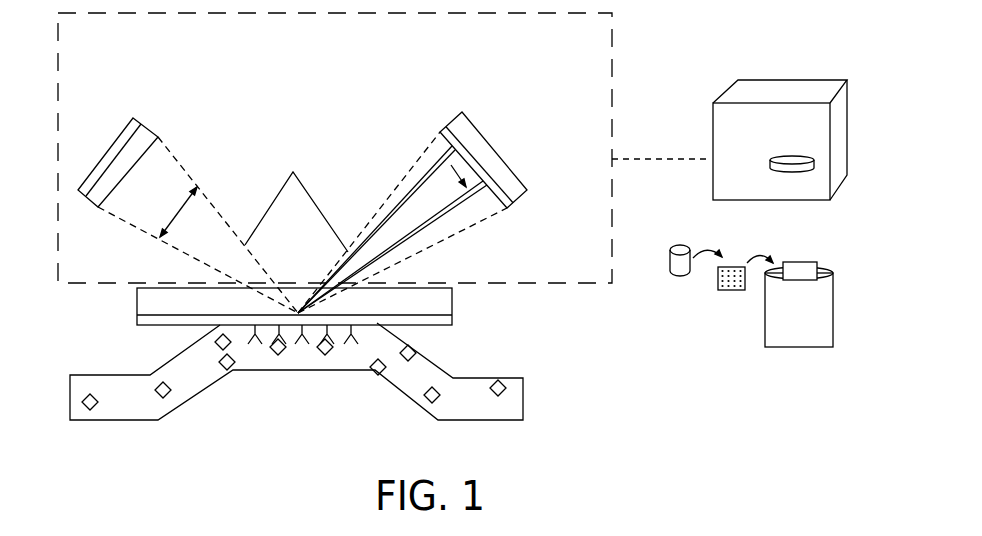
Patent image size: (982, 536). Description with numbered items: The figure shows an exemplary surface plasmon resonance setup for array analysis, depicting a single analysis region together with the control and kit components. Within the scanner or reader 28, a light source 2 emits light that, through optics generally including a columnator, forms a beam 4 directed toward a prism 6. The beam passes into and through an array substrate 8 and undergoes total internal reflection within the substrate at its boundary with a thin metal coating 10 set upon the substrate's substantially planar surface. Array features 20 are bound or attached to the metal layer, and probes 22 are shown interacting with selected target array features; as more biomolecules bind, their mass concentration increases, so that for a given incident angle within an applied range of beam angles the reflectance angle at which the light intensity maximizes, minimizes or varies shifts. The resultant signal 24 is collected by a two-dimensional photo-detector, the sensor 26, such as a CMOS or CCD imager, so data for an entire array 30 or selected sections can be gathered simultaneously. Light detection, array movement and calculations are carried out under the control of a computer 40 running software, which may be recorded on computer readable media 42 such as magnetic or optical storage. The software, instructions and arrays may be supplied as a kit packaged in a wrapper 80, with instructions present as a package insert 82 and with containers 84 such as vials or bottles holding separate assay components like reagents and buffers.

The light source 2 is at (127, 124).
The beam 4 is at (187, 170).
The prism 6 is at (298, 180).
The array substrate 8 is at (423, 303).
The thin metal coating 10 is at (447, 320).
The array features 20 is at (360, 330).
The probes 22 is at (320, 355).
The resultant signal 24 is at (463, 205).
The sensor 26 is at (520, 180).
The scanner or reader 28 is at (612, 32).
The array 30 is at (715, 282).
The computer 40 is at (712, 188).
The computer readable media 42 is at (795, 175).
The wrapper 80 is at (770, 318).
The package insert 82 is at (817, 262).
The containers 84 is at (672, 262).